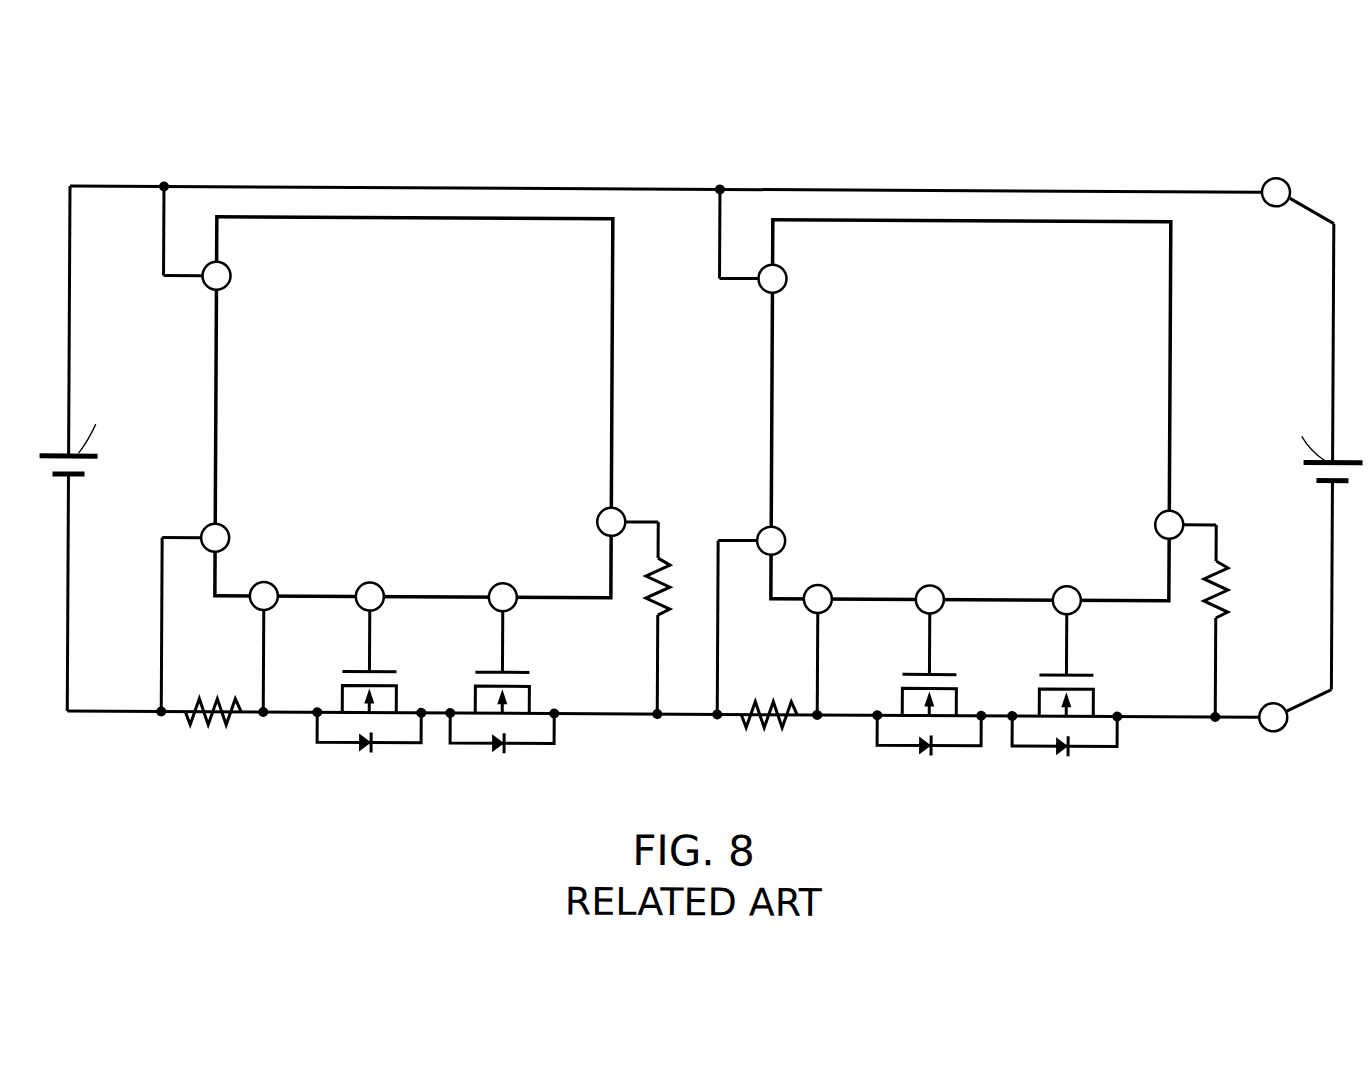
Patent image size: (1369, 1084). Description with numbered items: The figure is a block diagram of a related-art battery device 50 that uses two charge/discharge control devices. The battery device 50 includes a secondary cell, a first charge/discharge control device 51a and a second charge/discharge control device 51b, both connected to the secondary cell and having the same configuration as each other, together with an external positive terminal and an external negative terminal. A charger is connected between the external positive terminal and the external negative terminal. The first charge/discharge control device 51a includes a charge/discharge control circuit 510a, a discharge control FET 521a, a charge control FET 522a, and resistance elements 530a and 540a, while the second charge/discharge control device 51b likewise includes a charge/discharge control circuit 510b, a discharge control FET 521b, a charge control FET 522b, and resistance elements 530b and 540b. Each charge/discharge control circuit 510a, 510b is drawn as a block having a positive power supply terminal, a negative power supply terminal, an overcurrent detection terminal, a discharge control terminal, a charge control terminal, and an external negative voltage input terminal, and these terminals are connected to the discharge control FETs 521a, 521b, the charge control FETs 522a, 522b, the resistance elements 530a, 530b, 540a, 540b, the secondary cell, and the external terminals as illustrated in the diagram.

The battery device 50 is at (1171, 101).
The first charge/discharge control device 51a is at (964, 423).
The second charge/discharge control device 51b is at (404, 422).
The charge/discharge control circuit 510a is at (1053, 216).
The charge/discharge control circuit 510b is at (484, 216).
The discharge control FET 521a is at (960, 697).
The discharge control FET 521b is at (400, 697).
The charge control FET 522a is at (1097, 697).
The charge control FET 522b is at (533, 697).
The resistance element 530a is at (790, 722).
The resistance element 530b is at (234, 722).
The resistance element 540a is at (1206, 602).
The resistance element 540b is at (648, 602).